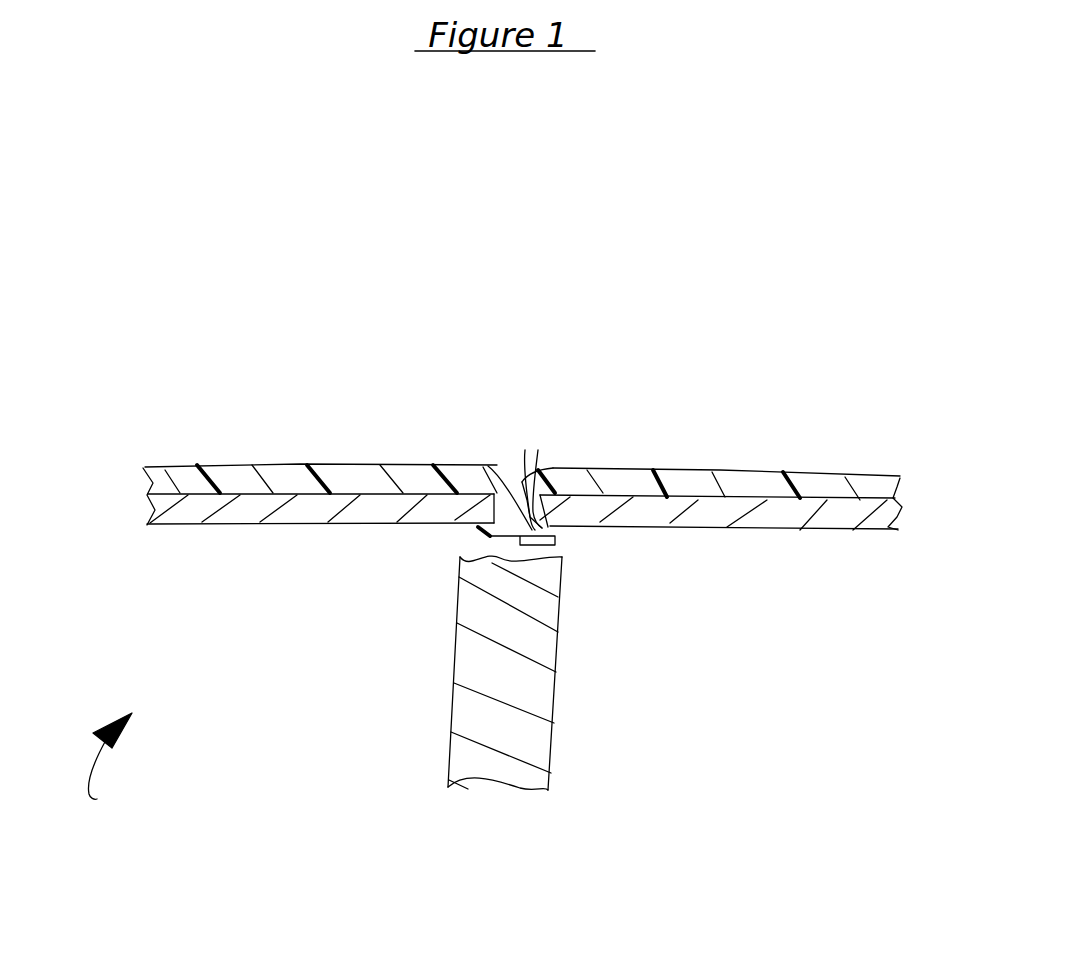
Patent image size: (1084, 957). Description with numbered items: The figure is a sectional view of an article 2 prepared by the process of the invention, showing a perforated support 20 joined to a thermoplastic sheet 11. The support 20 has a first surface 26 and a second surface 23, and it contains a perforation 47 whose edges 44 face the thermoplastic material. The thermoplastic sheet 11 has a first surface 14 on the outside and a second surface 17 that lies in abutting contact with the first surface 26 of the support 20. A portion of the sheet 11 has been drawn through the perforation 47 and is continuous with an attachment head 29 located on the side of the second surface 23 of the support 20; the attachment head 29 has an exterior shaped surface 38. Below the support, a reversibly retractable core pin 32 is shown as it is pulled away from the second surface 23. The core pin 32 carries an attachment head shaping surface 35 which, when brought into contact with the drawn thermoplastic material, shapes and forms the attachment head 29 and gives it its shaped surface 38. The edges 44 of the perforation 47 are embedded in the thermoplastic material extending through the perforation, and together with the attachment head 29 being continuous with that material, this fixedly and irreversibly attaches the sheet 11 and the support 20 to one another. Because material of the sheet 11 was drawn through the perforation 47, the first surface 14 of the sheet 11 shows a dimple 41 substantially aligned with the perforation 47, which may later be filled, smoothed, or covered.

The article 2 is at (110, 769).
The thermoplastic sheet 11 is at (232, 472).
The first surface of sheet 14 is at (274, 465).
The second surface of sheet 17 is at (360, 493).
The support 20 is at (178, 515).
The second surface of support 23 is at (224, 523).
The first surface of support 26 is at (297, 500).
The attachment head 29 is at (558, 545).
The reversibly retractable core pin 32 is at (547, 696).
The attachment head shaping surface 35 is at (497, 562).
The shaped surface of attachment head 38 is at (520, 541).
The dimple 41 is at (518, 465).
The edges of perforation 44 is at (505, 465).
The perforation 47 is at (525, 465).